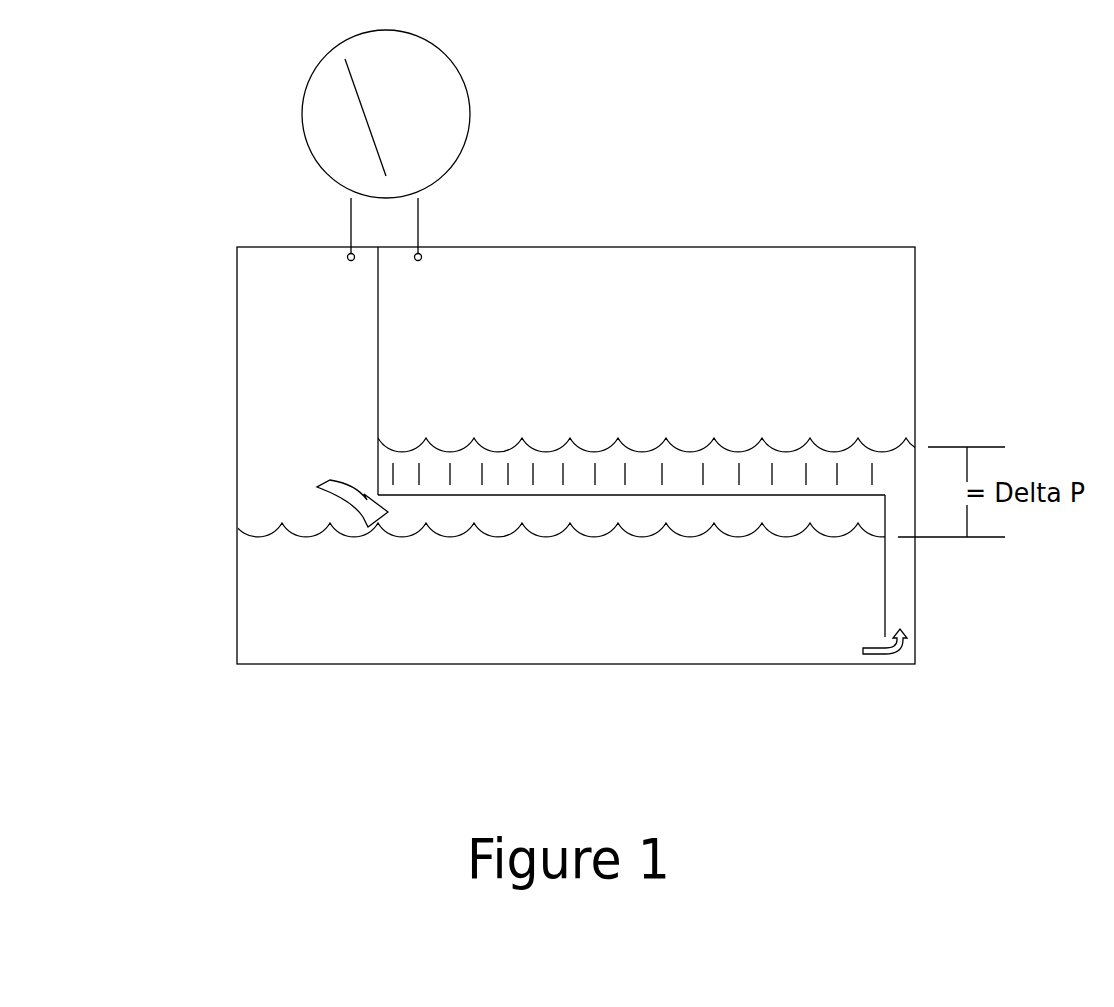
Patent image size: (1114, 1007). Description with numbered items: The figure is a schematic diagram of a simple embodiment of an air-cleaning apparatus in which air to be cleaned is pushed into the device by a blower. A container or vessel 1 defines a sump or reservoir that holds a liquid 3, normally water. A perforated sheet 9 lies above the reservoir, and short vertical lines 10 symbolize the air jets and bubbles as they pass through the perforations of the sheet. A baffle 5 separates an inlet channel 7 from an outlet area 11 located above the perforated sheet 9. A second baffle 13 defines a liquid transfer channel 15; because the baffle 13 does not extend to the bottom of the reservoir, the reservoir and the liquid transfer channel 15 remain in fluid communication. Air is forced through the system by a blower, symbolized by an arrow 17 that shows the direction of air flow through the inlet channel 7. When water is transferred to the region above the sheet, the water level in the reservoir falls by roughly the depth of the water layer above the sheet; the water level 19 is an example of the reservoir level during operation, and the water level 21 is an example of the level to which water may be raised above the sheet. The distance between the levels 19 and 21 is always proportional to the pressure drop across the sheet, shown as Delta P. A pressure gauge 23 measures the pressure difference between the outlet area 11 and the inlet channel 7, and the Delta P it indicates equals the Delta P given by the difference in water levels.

The container or vessel 1 is at (380, 664).
The liquid 3 is at (570, 626).
The baffle 5 is at (378, 370).
The inlet channel 7 is at (238, 356).
The perforated sheet 9 is at (632, 495).
The air jets and bubbles 10 is at (739, 470).
The outlet area 11 is at (666, 319).
The baffle 13 is at (882, 595).
The liquid transfer channel 15 is at (898, 570).
The arrow 17 is at (317, 488).
The water level in the reservoir 19 is at (592, 538).
The water level above the sheet 21 is at (498, 452).
The pressure gauge 23 is at (435, 70).